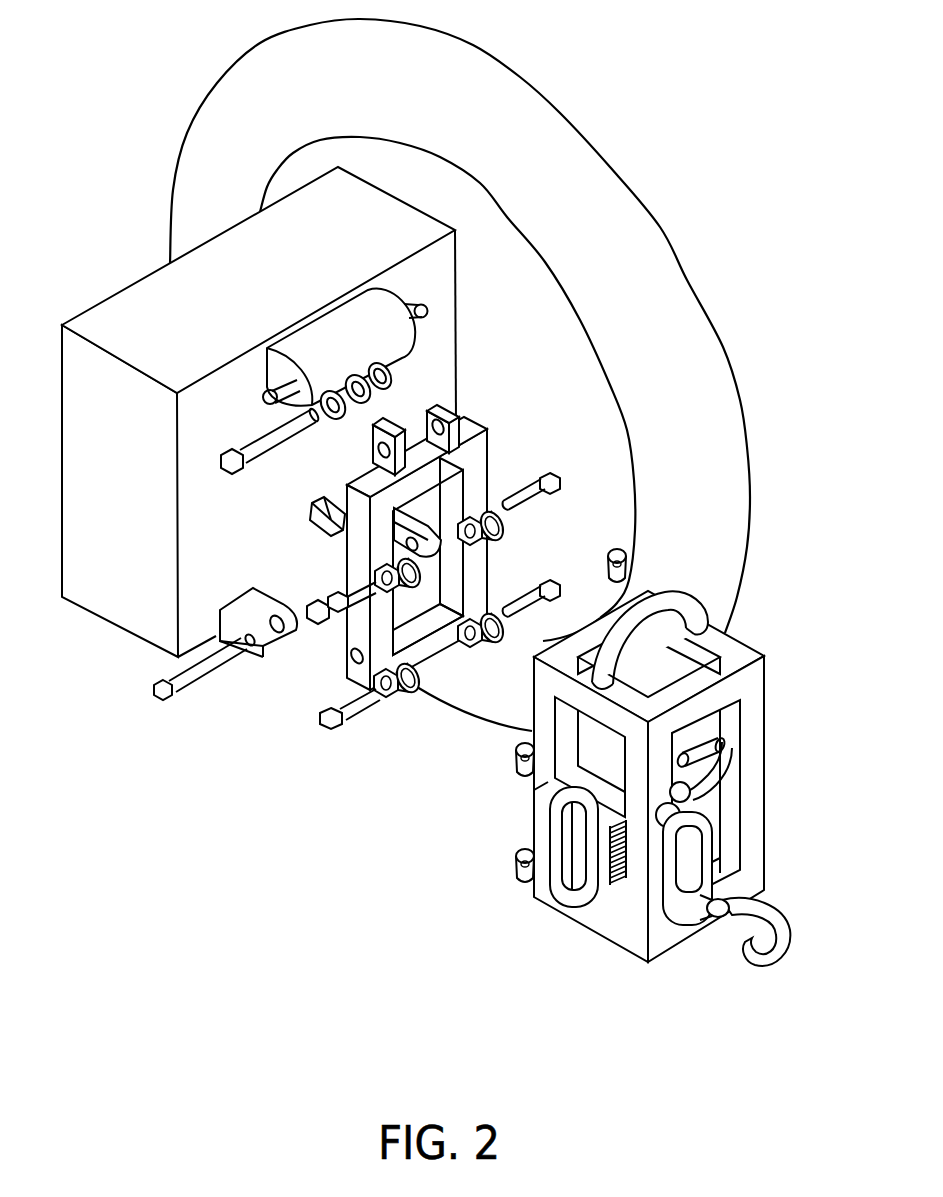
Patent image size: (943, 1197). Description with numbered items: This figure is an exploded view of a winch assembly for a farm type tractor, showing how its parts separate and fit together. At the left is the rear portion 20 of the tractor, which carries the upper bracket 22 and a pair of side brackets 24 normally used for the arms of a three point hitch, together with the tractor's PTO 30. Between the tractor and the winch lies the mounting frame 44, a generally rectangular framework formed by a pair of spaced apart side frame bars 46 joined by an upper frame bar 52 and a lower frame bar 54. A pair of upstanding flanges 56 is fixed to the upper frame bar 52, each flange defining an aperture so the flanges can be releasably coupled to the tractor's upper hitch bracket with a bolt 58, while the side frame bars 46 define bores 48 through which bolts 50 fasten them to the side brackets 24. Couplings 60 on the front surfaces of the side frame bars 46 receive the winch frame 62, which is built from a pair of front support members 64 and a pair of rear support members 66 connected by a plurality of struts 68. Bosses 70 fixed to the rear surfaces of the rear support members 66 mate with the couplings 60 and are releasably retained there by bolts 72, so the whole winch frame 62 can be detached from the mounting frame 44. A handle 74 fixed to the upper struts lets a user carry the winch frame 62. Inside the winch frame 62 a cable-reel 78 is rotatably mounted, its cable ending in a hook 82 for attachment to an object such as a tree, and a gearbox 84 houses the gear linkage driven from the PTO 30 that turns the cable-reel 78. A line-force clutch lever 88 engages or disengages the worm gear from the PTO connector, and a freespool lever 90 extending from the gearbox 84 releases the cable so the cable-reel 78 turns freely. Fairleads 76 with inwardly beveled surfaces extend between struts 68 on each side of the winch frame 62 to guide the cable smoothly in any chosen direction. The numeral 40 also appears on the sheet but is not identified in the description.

The rear portion 20 is at (130, 285).
The upper bracket 22 is at (332, 420).
The side brackets 24 is at (228, 600).
The PTO 30 is at (307, 510).
The actuator assembly 40 is at (250, 840).
The mounting frame 44 is at (503, 448).
The side frame bars 46 is at (490, 470).
The bores 48 is at (350, 659).
The bolts 50 is at (208, 673).
The upper frame bar 52 is at (470, 420).
The lower frame bar 54 is at (436, 657).
The upstanding flanges 56 is at (433, 392).
The bolt 58 is at (247, 445).
The couplings 60 is at (400, 697).
The winch frame 62 is at (787, 682).
The front support members 64 is at (769, 877).
The rear support members 66 is at (530, 786).
The struts 68 is at (720, 638).
The bosses 70 is at (607, 565).
The bolts 72 is at (330, 600).
The handle 74 is at (707, 623).
The fairleads 76 is at (553, 890).
The cable-reel 78 is at (612, 887).
The hook 82 is at (766, 972).
The gearbox 84 is at (583, 739).
The line-force clutch lever 88 is at (717, 734).
The freespool lever 90 is at (717, 788).